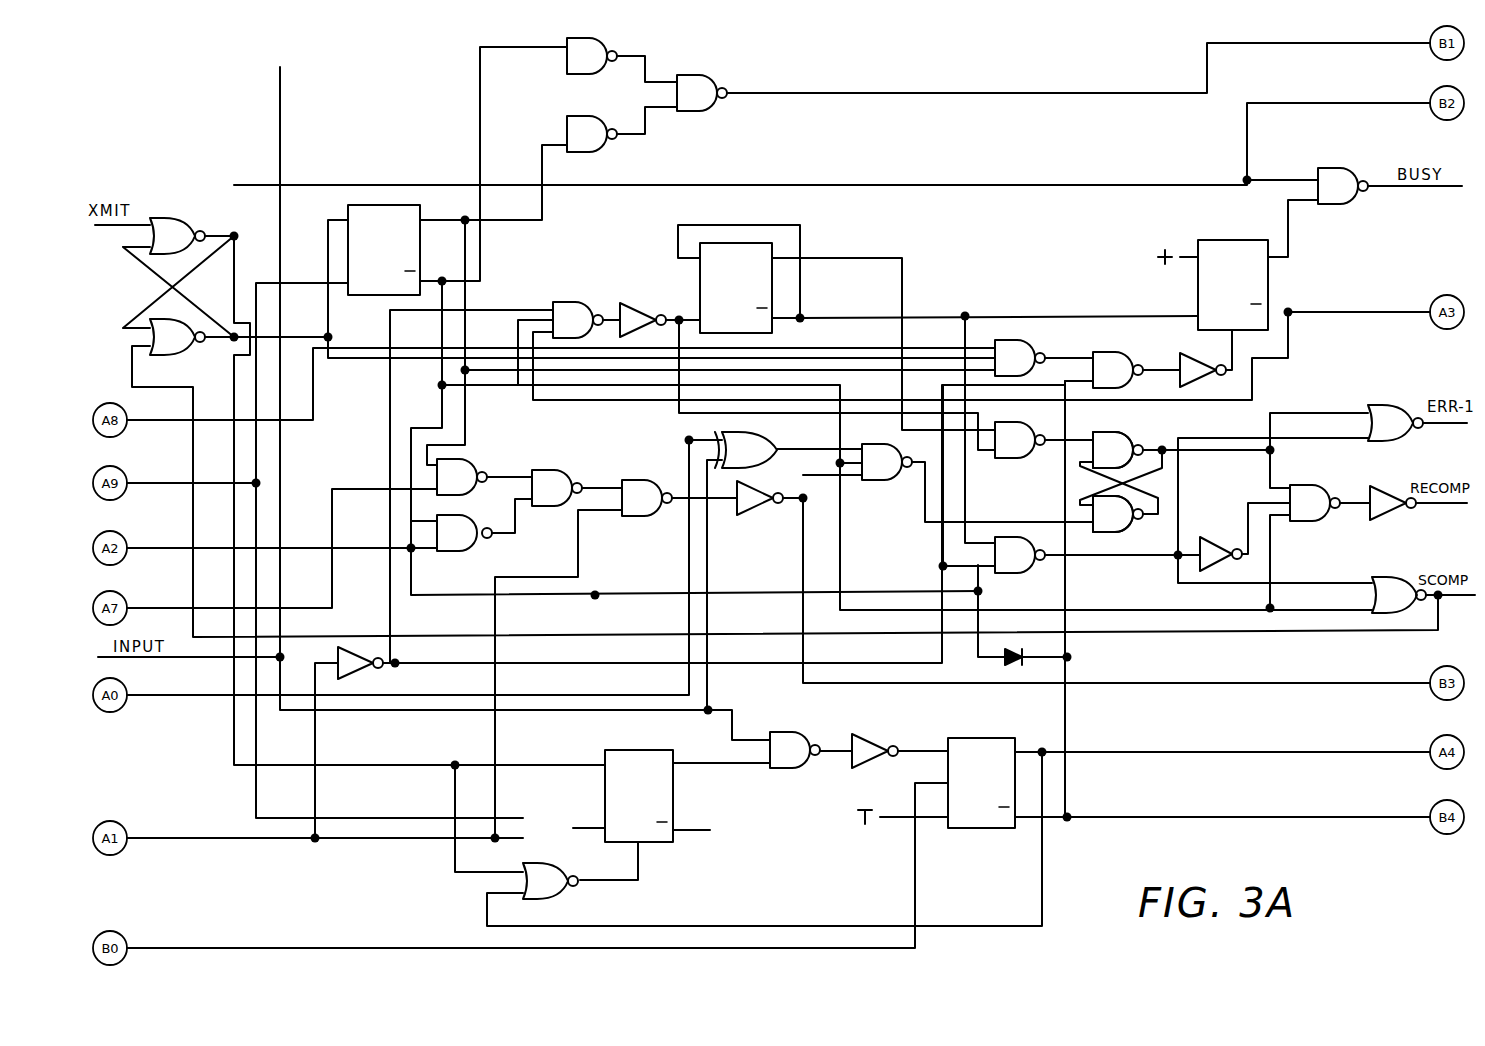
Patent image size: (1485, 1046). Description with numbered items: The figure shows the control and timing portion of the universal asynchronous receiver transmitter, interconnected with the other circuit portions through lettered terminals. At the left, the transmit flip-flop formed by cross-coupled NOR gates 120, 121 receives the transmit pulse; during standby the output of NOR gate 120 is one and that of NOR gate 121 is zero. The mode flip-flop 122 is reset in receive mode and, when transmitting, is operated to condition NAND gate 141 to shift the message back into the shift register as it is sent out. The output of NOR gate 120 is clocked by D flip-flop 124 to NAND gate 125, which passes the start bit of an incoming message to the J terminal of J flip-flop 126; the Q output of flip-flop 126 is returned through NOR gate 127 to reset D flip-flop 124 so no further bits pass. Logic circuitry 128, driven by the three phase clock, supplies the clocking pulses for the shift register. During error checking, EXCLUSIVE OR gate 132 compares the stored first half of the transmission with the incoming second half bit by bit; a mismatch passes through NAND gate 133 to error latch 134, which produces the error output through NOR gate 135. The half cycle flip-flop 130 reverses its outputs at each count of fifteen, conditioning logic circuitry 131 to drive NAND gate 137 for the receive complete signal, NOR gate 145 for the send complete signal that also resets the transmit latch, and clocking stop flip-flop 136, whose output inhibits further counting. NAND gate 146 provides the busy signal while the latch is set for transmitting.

The NOR gate 120 is at (178, 216).
The NOR gate 121 is at (178, 355).
The mode flip-flop 122 is at (350, 296).
The D flip-flop 124 is at (673, 783).
The NAND gate 125 is at (787, 732).
The J flip-flop 126 is at (985, 738).
The NOR gate 127 is at (548, 899).
The logic circuitry 128 is at (567, 556).
The half cycle flip-flop 130 is at (698, 285).
The logic circuitry 131 is at (1030, 493).
The EXCLUSIVE OR gate 132 is at (733, 430).
The NAND gate 133 is at (890, 481).
The error latch 134 is at (1170, 423).
The NOR gate 135 is at (1392, 405).
The stop flip-flop 136 is at (1268, 281).
The NAND gate 137 is at (1306, 485).
The NAND gate 141 is at (590, 152).
The NOR gate 145 is at (1392, 577).
The NAND gate 146 is at (1330, 168).